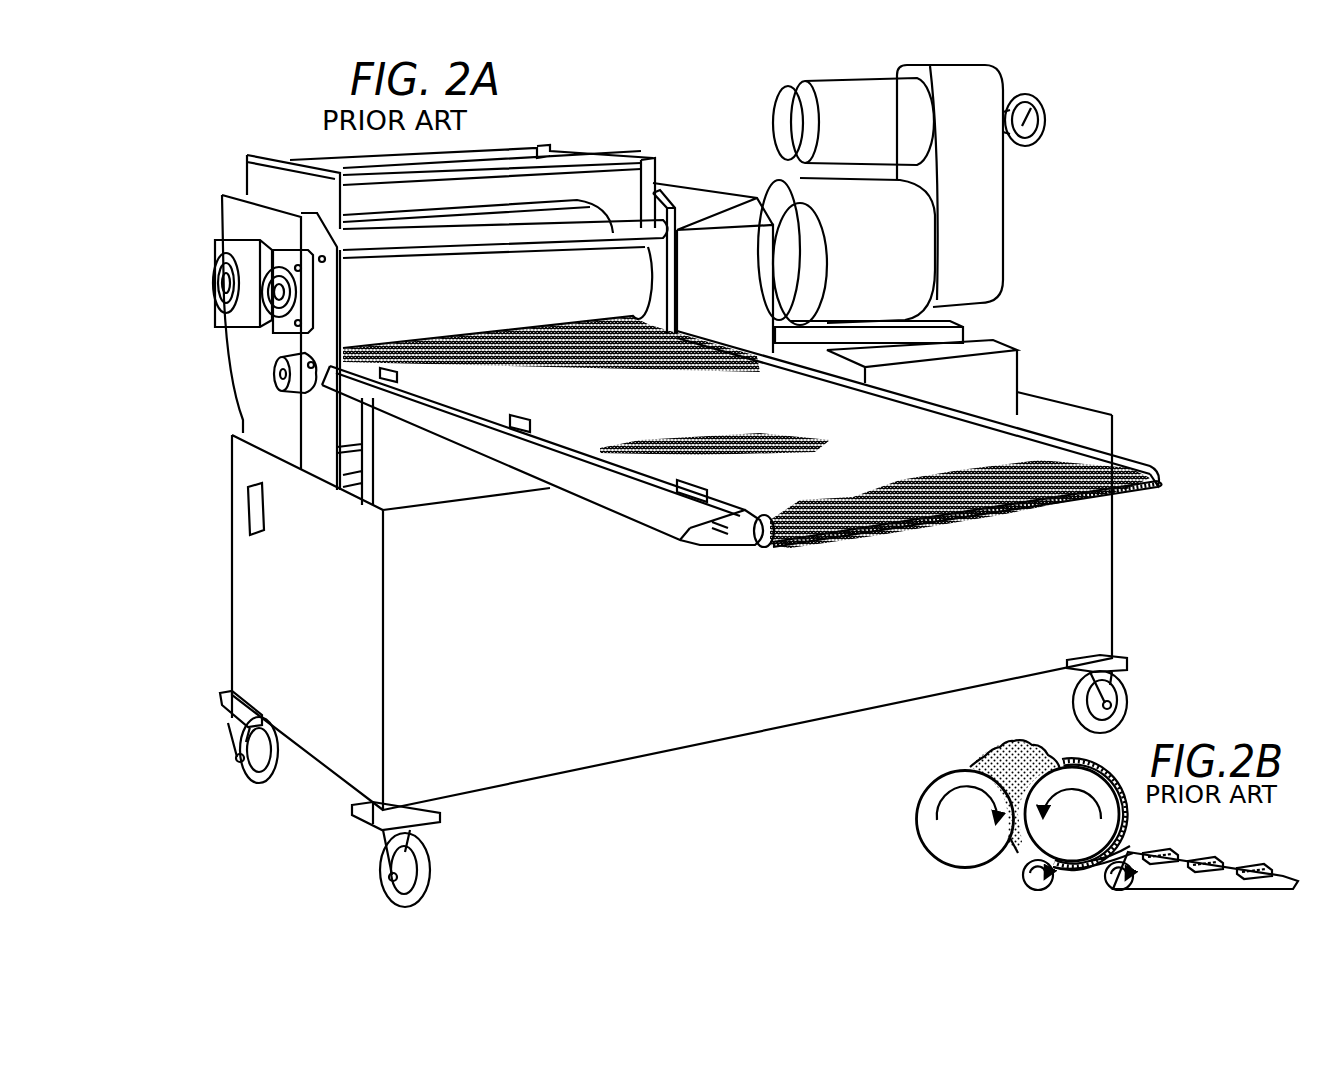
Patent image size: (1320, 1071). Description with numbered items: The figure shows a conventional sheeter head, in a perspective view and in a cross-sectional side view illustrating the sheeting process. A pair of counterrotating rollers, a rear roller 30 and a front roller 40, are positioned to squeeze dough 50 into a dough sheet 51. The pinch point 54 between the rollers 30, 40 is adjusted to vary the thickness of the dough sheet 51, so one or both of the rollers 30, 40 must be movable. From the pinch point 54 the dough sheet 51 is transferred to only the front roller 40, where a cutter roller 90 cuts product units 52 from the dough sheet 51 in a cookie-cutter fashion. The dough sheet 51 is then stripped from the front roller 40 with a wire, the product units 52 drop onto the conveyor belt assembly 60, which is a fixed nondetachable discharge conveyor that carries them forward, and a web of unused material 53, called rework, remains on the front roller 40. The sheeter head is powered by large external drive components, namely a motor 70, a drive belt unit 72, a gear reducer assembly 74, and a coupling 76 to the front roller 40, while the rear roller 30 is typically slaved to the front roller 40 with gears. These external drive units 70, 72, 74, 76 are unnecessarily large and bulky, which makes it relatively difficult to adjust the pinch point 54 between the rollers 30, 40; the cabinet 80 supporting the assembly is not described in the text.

In FIG. 2A, the rear roller 30 is at (374, 222).
In FIG. 2B, the rear roller 30 is at (942, 790).
In FIG. 2A, the front roller 40 is at (537, 228).
In FIG. 2B, the front roller 40 is at (1097, 783).
In FIG. 2B, the dough 50 is at (1016, 743).
In FIG. 2B, the dough sheet 51 is at (1087, 875).
In FIG. 2B, the product units 52 is at (1200, 857).
In FIG. 2B, the web of unused material 53 is at (1130, 813).
In FIG. 2B, the pinch point 54 is at (1008, 853).
In FIG. 2A, the conveyor belt assembly 60 is at (880, 533).
In FIG. 2B, the conveyor belt assembly 60 is at (1263, 878).
In FIG. 2A, the motor 70 is at (833, 93).
In FIG. 2A, the drive belt unit 72 is at (967, 97).
In FIG. 2A, the gear reducer assembly 74 is at (903, 250).
In FIG. 2A, the coupling 76 is at (706, 207).
In FIG. 2A, the cabinet 80 is at (1070, 570).
In FIG. 2B, the cutter roller 90 is at (1023, 875).